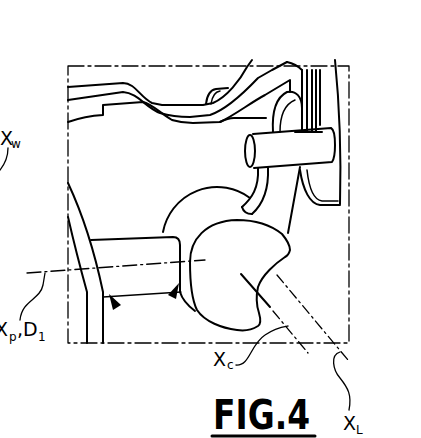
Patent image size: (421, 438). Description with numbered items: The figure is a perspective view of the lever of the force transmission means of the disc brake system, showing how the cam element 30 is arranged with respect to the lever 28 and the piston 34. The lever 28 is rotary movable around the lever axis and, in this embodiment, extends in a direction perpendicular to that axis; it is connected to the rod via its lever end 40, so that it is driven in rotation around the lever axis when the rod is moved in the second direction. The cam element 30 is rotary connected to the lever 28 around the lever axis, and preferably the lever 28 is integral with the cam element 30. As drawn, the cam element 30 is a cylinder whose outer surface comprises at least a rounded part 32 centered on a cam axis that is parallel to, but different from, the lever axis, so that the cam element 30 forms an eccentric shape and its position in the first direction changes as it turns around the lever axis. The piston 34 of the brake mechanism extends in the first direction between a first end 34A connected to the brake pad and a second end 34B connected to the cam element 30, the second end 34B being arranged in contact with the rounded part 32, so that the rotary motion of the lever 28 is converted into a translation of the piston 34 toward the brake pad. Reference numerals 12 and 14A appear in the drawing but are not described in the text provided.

The housing wall 12 is at (51, 263).
The bracket 14A is at (145, 78).
The lever 28 is at (280, 203).
The cam element 30 is at (223, 260).
The rounded part 32 is at (170, 235).
The piston 34 is at (136, 283).
The first end 34A is at (118, 312).
The second end 34B is at (171, 298).
The lever end 40 is at (293, 120).